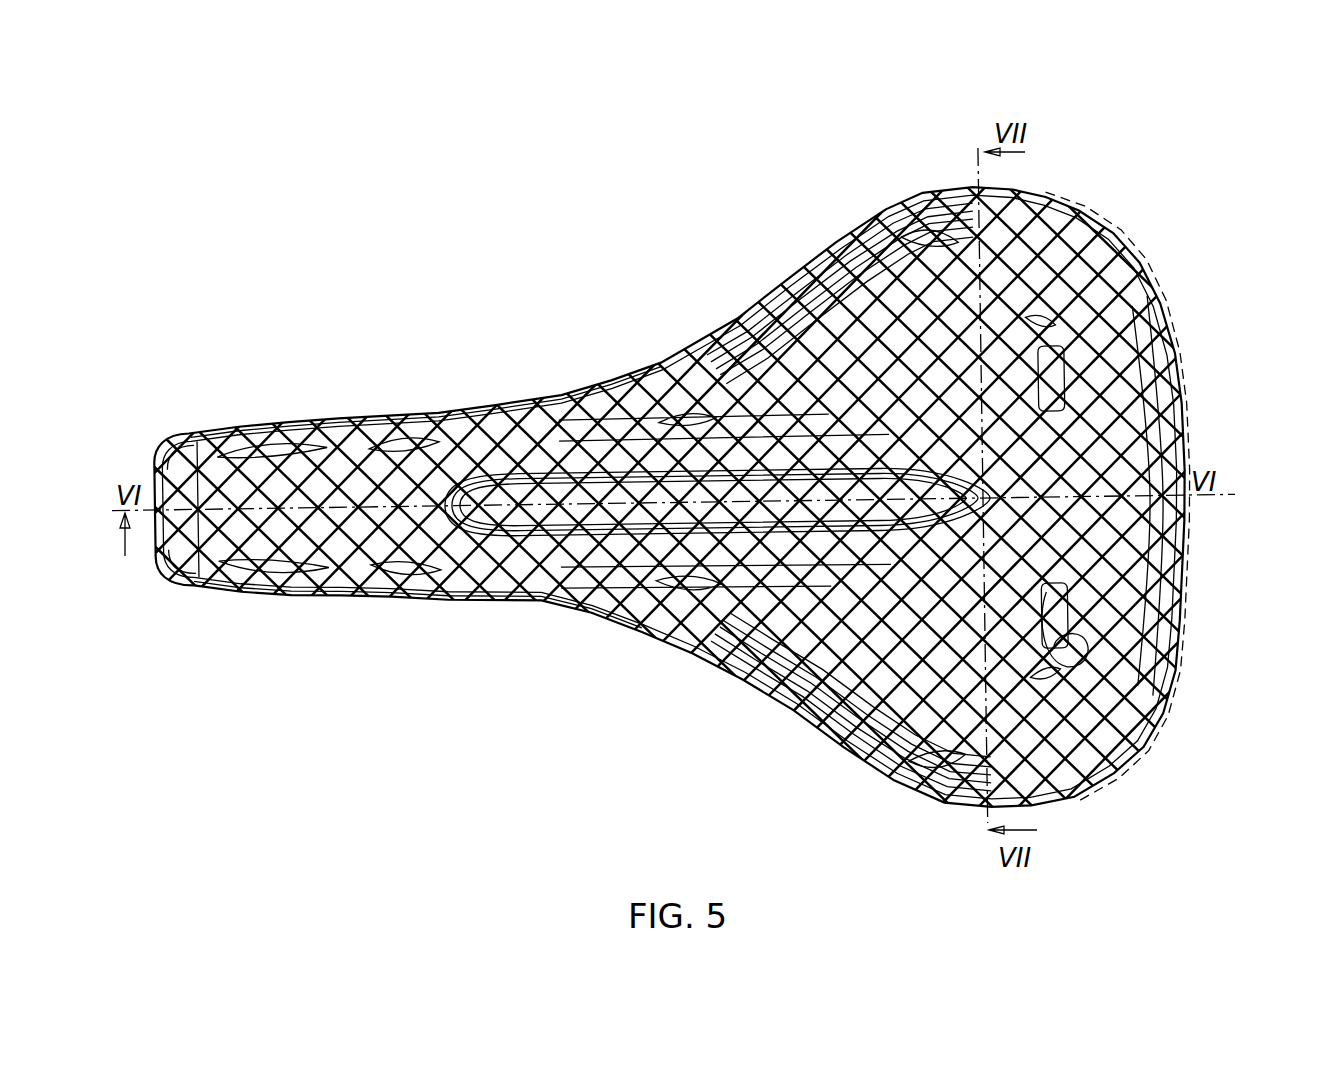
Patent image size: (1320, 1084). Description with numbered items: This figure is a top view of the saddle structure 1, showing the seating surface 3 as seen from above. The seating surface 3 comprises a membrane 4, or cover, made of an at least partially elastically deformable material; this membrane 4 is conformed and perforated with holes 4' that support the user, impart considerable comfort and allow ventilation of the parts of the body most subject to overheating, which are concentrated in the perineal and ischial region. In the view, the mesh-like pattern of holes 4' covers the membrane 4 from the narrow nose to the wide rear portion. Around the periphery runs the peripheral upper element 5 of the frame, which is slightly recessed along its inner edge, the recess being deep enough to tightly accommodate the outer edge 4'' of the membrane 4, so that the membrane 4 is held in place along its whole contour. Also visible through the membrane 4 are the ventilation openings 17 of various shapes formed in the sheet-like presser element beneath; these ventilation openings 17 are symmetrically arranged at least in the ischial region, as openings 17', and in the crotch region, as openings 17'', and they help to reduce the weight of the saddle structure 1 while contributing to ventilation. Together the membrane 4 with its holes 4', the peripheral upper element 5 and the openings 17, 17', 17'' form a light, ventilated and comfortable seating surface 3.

The saddle structure 1 is at (683, 219).
The seating surface 3 is at (488, 381).
The membrane 4 is at (670, 502).
The holes 4' is at (725, 428).
The outer edge of the membrane 4'' is at (1168, 497).
The peripheral upper element 5 is at (1178, 366).
The ventilation openings 17 is at (343, 576).
The ischial region ventilation openings 17' is at (718, 583).
The crotch region ventilation openings 17'' is at (1081, 489).